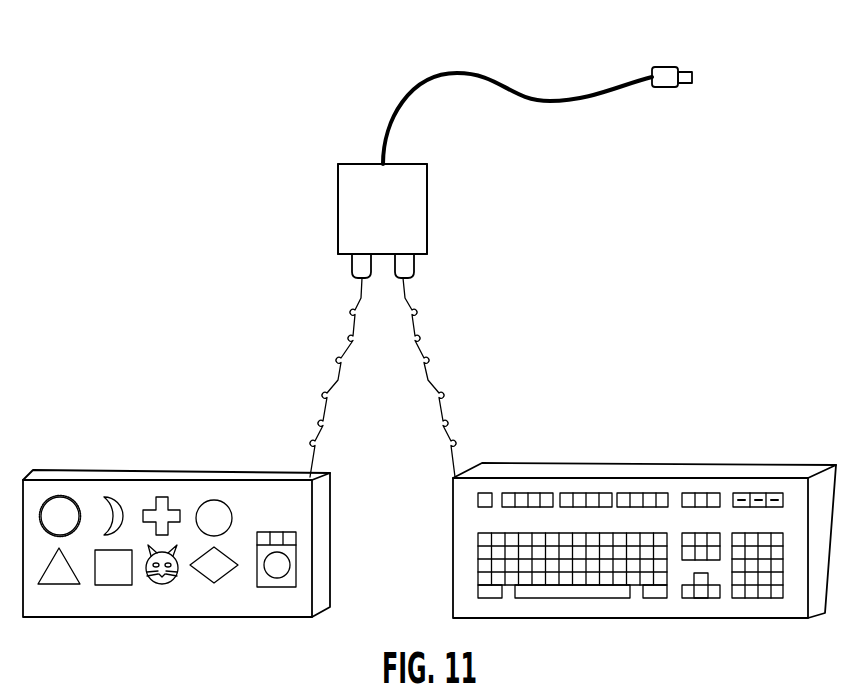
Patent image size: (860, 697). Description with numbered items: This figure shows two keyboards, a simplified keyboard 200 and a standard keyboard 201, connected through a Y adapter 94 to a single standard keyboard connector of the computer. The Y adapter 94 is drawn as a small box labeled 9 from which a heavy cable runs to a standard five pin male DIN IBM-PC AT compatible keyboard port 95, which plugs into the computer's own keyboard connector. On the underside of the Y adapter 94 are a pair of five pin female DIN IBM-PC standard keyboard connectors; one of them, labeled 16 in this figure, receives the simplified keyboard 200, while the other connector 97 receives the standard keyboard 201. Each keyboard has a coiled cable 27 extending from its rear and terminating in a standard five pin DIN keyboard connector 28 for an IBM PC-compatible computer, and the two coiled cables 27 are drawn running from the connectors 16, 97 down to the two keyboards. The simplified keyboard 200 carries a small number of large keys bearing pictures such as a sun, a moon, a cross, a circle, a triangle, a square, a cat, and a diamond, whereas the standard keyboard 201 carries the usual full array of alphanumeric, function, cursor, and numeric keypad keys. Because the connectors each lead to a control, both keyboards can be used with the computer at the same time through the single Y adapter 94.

The interface adapter unit 9 is at (389, 217).
The Y adapter 94 is at (399, 209).
The standard 5 pin male DIN IBM-PC AT compatible keyboard port 95 is at (667, 65).
The input device connector 16 is at (352, 267).
The 5 pin female DIN IBM-PC standard keyboard connector 97 is at (414, 267).
The standard 5 pin DIN keyboard connector 28 is at (352, 280).
The coiled cable 27 is at (338, 380).
The simplified keyboard 200 is at (296, 519).
The standard keyboard 201 is at (787, 531).